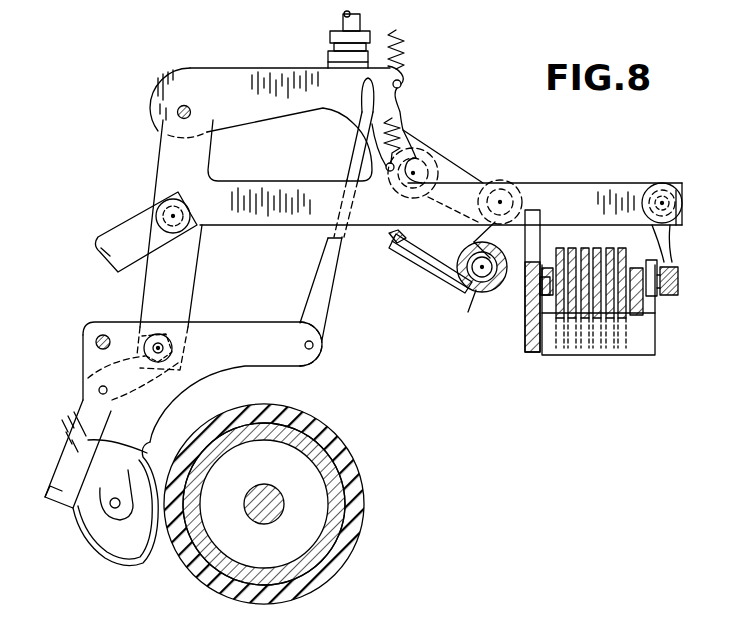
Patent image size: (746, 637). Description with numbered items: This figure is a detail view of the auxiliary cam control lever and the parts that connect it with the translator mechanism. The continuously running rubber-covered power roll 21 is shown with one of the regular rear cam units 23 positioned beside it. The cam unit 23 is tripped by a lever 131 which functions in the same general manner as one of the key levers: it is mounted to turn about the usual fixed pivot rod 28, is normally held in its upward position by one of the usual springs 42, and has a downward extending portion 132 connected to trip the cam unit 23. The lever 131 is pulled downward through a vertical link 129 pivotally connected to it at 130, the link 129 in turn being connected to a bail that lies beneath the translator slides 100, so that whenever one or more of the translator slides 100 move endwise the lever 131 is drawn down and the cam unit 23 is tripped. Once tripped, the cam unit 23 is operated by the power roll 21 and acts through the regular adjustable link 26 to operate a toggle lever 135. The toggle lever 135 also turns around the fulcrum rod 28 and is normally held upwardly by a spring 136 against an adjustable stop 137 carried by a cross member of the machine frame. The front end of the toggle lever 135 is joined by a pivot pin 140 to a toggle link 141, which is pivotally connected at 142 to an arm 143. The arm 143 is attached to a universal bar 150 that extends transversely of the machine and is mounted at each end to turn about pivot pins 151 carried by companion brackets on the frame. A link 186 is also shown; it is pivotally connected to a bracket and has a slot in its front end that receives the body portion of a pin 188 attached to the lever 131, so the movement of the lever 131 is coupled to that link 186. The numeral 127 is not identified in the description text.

The power roll 21 is at (358, 487).
The rear cam unit 23 is at (74, 369).
The adjustable link 26 is at (328, 282).
The fulcrum rod 28 is at (178, 111).
The spring 42 is at (397, 134).
The translator slides 100 is at (563, 245).
The base 127 is at (399, 634).
The vertical link 129 is at (665, 233).
The pivot connection 130 is at (661, 195).
The lever 131 is at (589, 190).
The downward extending portion 132 is at (150, 299).
The toggle lever 135 is at (247, 72).
The spring 136 is at (407, 48).
The adjustable stop 137 is at (372, 32).
The pivot pin 140 is at (422, 168).
The toggle link 141 is at (452, 173).
The pivot connection 142 is at (418, 240).
The arm 143 is at (422, 257).
The universal bar 150 is at (392, 238).
The pivot pins 151 is at (477, 288).
The link 186 is at (113, 223).
The pin 188 is at (190, 208).